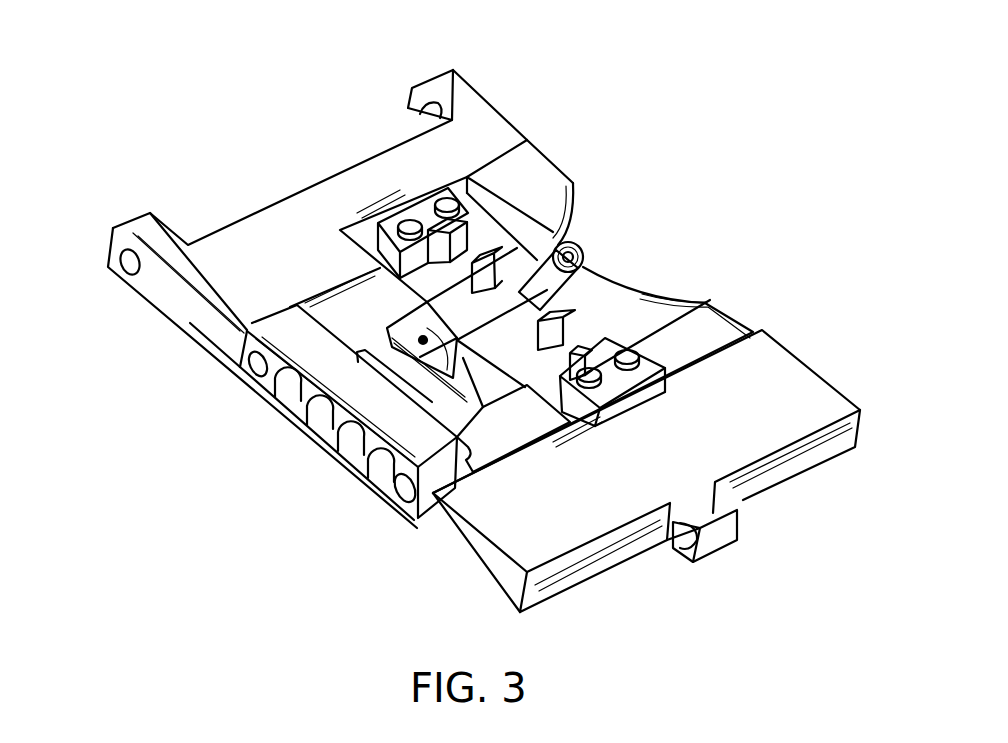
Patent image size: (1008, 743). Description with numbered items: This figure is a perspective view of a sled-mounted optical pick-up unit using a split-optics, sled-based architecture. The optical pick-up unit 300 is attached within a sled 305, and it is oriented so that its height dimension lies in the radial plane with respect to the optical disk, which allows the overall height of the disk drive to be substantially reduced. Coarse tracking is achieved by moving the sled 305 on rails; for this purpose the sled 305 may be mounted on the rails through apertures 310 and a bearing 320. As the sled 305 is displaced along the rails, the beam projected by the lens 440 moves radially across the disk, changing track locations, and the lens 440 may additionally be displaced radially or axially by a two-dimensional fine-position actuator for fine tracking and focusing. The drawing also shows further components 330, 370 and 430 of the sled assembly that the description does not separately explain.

The optical pick-up unit 300 is at (387, 278).
The sled 305 is at (471, 341).
The apertures 310 is at (420, 116).
The bearing 320 is at (691, 548).
The side bar with apertures 330 is at (301, 412).
The tab plate 370 is at (525, 435).
The actuator block 430 is at (669, 300).
The lens 440 is at (615, 226).